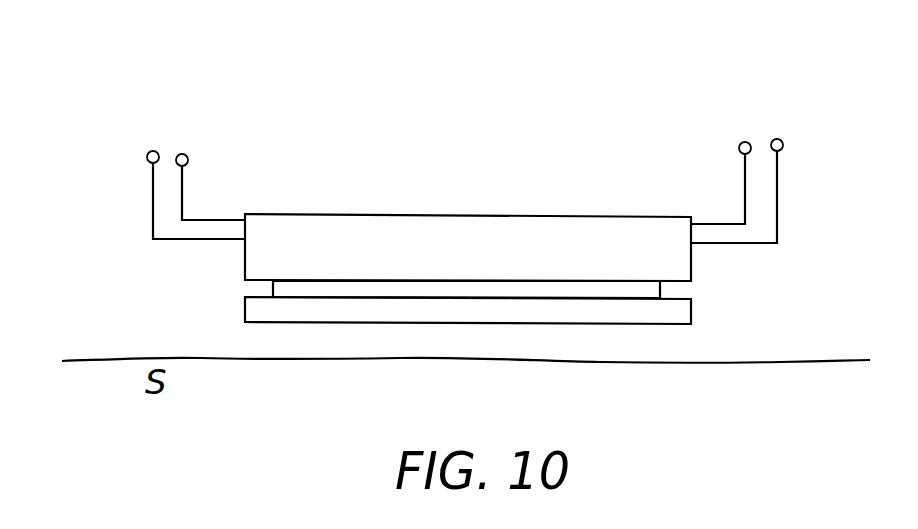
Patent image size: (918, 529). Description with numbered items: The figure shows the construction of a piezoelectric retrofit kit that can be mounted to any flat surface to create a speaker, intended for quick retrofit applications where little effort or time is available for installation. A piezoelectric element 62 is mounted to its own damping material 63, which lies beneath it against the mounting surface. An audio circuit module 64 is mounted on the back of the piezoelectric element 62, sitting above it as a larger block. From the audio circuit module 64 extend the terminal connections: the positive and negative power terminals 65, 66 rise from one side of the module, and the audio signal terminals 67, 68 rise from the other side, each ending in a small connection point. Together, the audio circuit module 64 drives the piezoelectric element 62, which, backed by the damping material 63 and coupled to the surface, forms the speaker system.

The piezoelectric element 62 is at (661, 290).
The damping material 63 is at (692, 315).
The audio circuit module 64 is at (422, 214).
The positive power terminal 65 is at (147, 153).
The negative power terminal 66 is at (188, 156).
The lead terminal 67 is at (739, 146).
The audio signal terminal 68 is at (783, 144).